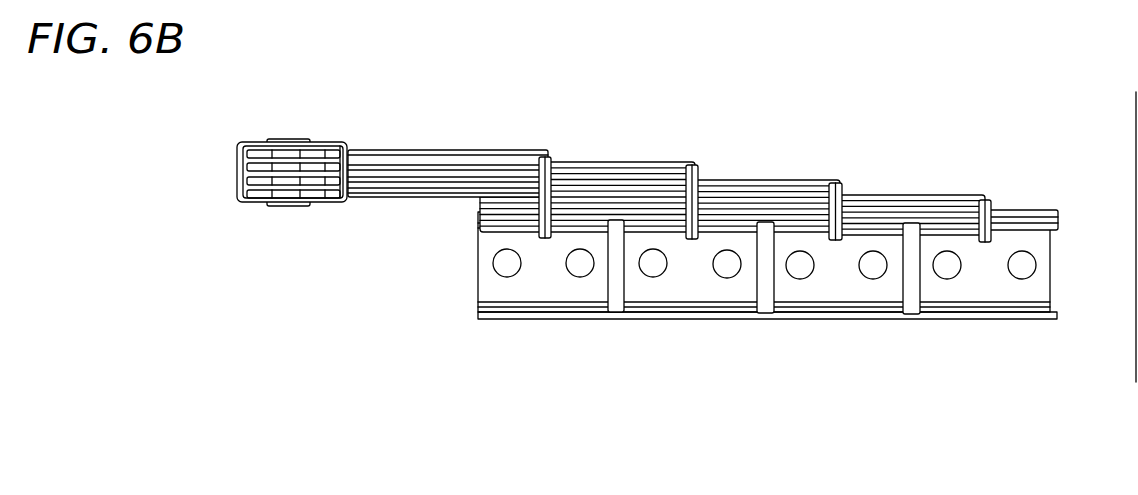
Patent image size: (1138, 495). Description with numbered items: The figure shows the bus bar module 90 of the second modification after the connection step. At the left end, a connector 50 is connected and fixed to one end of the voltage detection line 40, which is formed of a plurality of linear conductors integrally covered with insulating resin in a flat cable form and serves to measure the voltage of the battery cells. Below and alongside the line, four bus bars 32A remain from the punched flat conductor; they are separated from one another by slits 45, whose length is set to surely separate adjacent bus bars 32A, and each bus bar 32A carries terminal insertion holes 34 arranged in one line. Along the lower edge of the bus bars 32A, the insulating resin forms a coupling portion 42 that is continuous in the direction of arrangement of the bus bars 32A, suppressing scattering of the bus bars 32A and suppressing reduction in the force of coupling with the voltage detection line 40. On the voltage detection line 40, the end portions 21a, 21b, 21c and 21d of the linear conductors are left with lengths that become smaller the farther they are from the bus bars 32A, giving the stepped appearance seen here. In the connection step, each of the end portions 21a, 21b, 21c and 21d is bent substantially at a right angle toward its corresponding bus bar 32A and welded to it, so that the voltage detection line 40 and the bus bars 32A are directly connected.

The connector 50 is at (292, 137).
The voltage detection line 40 is at (446, 142).
The bus bar module 90 is at (662, 126).
The end portion of linear conductor 21a is at (998, 210).
The end portion of linear conductor 21b is at (847, 212).
The end portion of linear conductor 21c is at (702, 212).
The end portion of linear conductor 21d is at (556, 213).
The slit 45 is at (624, 244).
The terminal insertion hole 34 is at (516, 268).
The bus bar 32A is at (545, 312).
The coupling portion 42 is at (1036, 322).